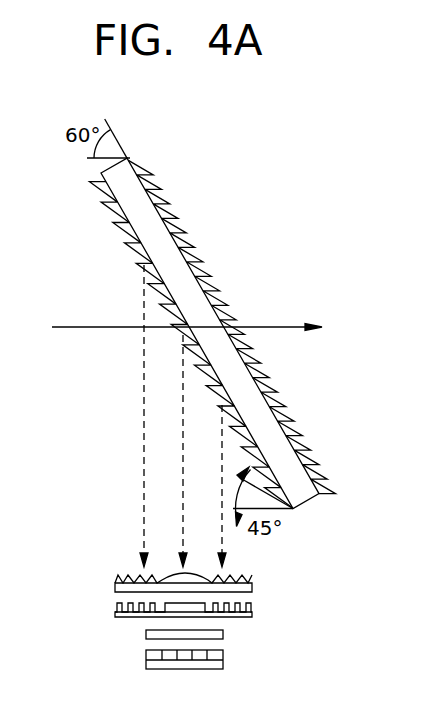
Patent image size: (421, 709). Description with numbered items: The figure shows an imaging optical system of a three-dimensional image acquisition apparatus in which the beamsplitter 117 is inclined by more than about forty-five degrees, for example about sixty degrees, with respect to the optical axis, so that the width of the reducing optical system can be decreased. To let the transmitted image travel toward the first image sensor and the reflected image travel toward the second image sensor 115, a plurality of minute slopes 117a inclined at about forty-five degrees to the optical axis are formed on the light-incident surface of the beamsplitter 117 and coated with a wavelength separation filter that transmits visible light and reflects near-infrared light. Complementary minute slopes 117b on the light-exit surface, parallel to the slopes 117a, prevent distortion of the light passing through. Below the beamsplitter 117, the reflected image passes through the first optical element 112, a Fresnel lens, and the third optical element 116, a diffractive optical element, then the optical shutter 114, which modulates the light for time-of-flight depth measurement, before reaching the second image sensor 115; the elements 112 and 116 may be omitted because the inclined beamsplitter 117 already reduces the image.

The first optical element 112 is at (113, 583).
The optical shutter 114 is at (146, 632).
The second image sensor 115 is at (146, 657).
The third optical element 116 is at (113, 611).
The beamsplitter 117 is at (307, 495).
The slopes 117a is at (110, 219).
The slopes 117b is at (157, 183).